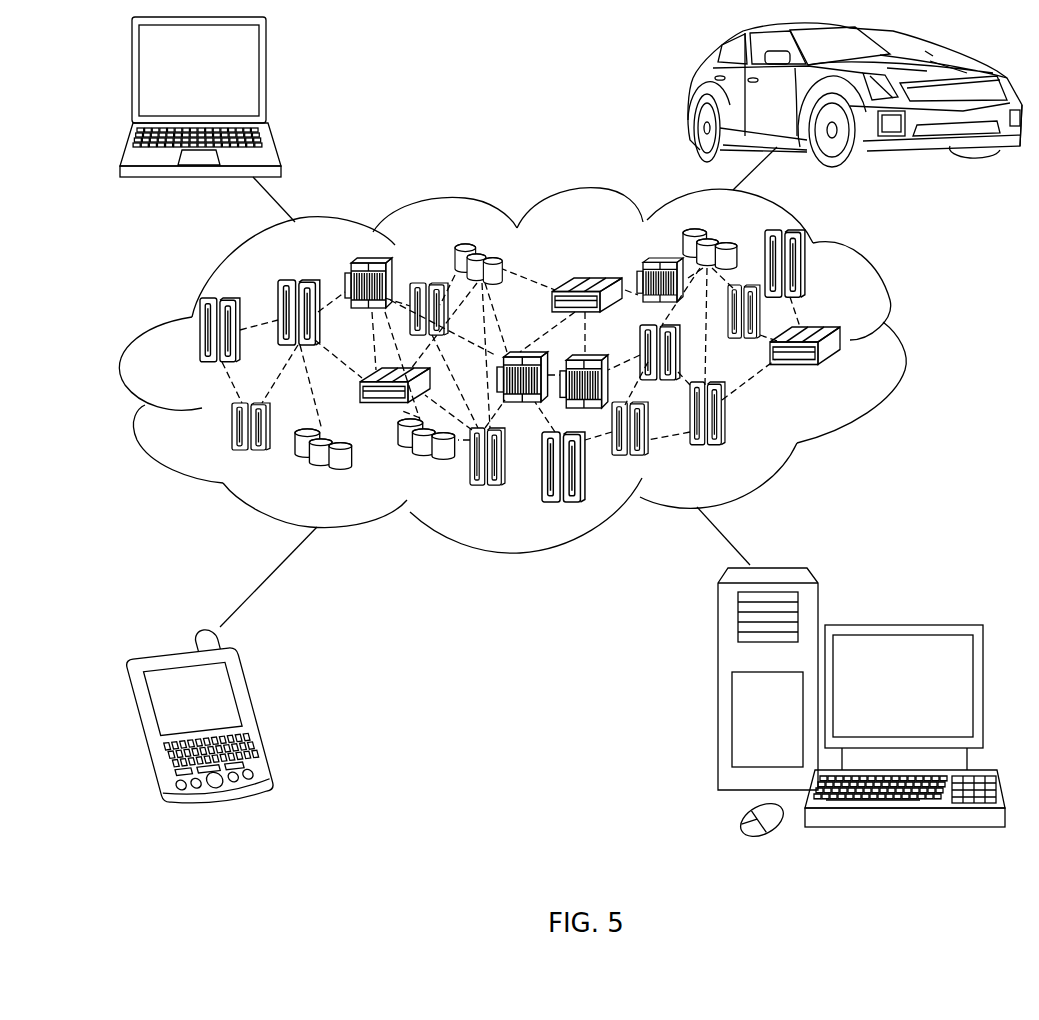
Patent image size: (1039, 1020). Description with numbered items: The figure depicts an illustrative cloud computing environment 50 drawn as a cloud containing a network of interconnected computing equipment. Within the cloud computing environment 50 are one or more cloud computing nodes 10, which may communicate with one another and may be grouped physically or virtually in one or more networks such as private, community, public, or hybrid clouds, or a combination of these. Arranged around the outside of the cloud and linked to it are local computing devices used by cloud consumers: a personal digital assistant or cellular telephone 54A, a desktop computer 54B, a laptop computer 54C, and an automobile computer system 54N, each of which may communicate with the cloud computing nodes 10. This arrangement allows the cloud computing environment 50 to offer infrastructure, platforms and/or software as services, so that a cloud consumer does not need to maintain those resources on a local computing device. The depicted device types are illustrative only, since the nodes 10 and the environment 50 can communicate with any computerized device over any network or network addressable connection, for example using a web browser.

The laptop computer 54C is at (266, 79).
The automobile computer system 54N is at (690, 93).
The personal digital assistant (PDA) or cellular telephone 54A is at (262, 706).
The desktop computer 54B is at (900, 625).
The cloud computing environment 50 is at (905, 348).
The cloud computing node 10 is at (850, 375).